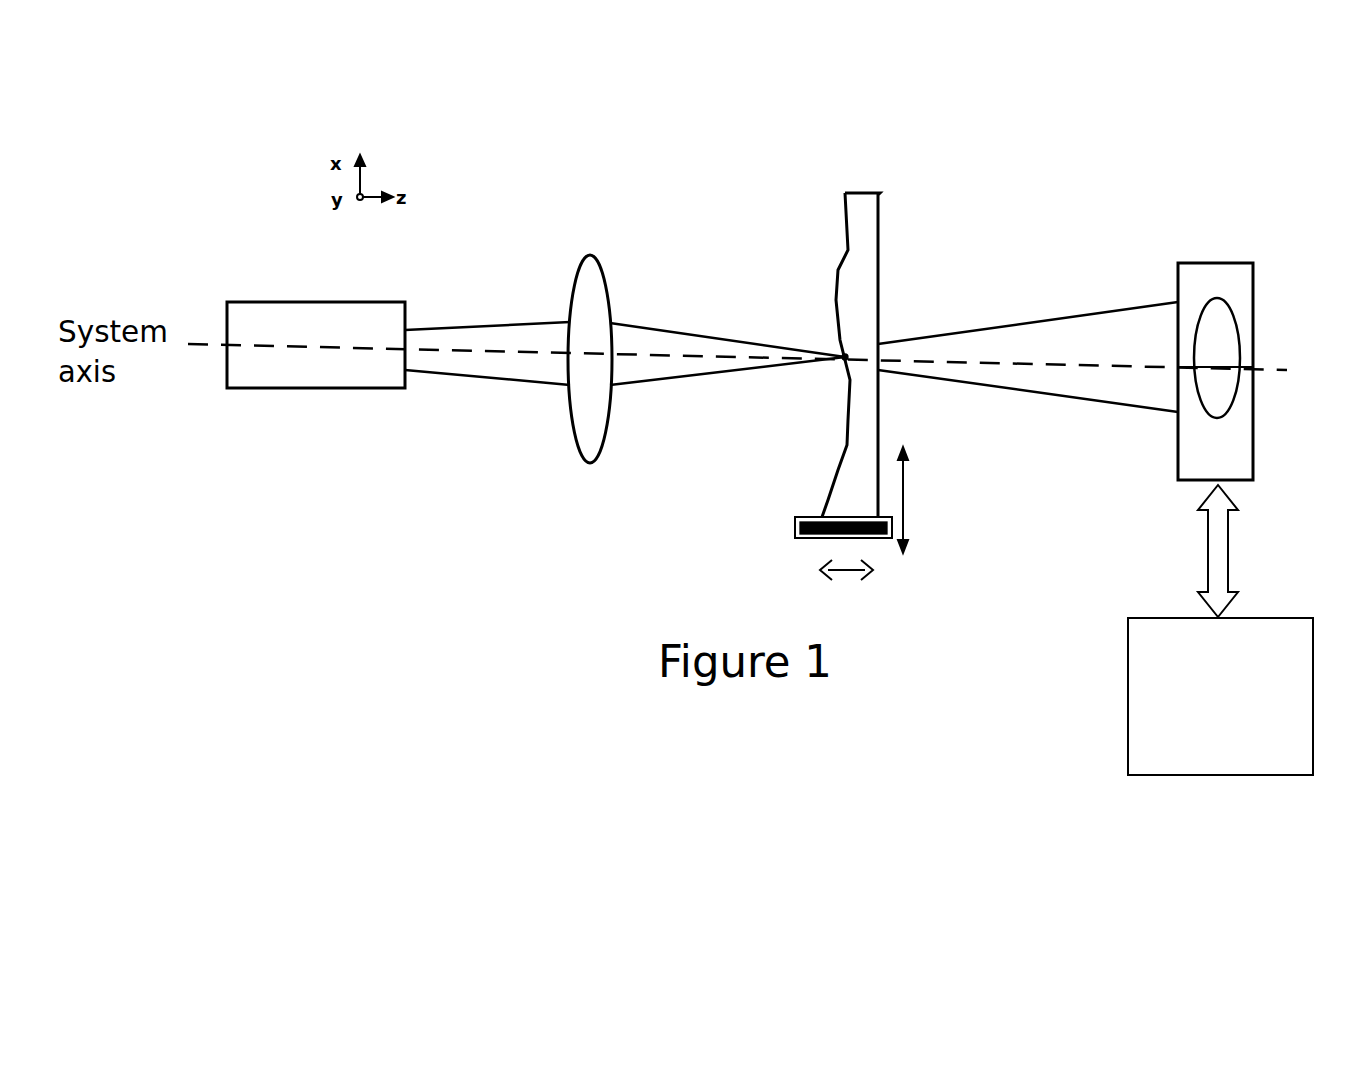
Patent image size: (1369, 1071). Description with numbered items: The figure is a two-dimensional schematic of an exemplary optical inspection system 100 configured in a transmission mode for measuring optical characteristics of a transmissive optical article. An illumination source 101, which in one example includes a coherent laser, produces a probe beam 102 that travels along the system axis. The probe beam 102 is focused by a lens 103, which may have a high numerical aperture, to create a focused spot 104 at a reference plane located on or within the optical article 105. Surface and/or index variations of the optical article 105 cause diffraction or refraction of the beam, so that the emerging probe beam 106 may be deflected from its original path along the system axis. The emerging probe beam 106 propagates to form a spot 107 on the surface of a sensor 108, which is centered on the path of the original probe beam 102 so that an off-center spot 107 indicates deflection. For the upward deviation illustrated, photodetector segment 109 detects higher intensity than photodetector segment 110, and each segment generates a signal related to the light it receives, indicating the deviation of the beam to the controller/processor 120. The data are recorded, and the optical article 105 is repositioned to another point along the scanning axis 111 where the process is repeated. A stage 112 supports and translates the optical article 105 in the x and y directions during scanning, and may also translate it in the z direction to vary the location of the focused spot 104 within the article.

The optical inspection system 100 is at (377, 611).
The illumination source 101 is at (283, 302).
The probe beam 102 is at (490, 322).
The lens 103 is at (600, 258).
The focused spot 104 is at (838, 368).
The optical article 105 is at (830, 278).
The emerging probe beam 106 is at (1078, 318).
The spot 107 is at (1240, 333).
The sensor 108 is at (1201, 262).
The photodetector segment 109 is at (1256, 310).
The photodetector segment 110 is at (1256, 430).
The scanning axis 111 is at (904, 513).
The stage 112 is at (795, 523).
The controller/processor 120 is at (1290, 628).